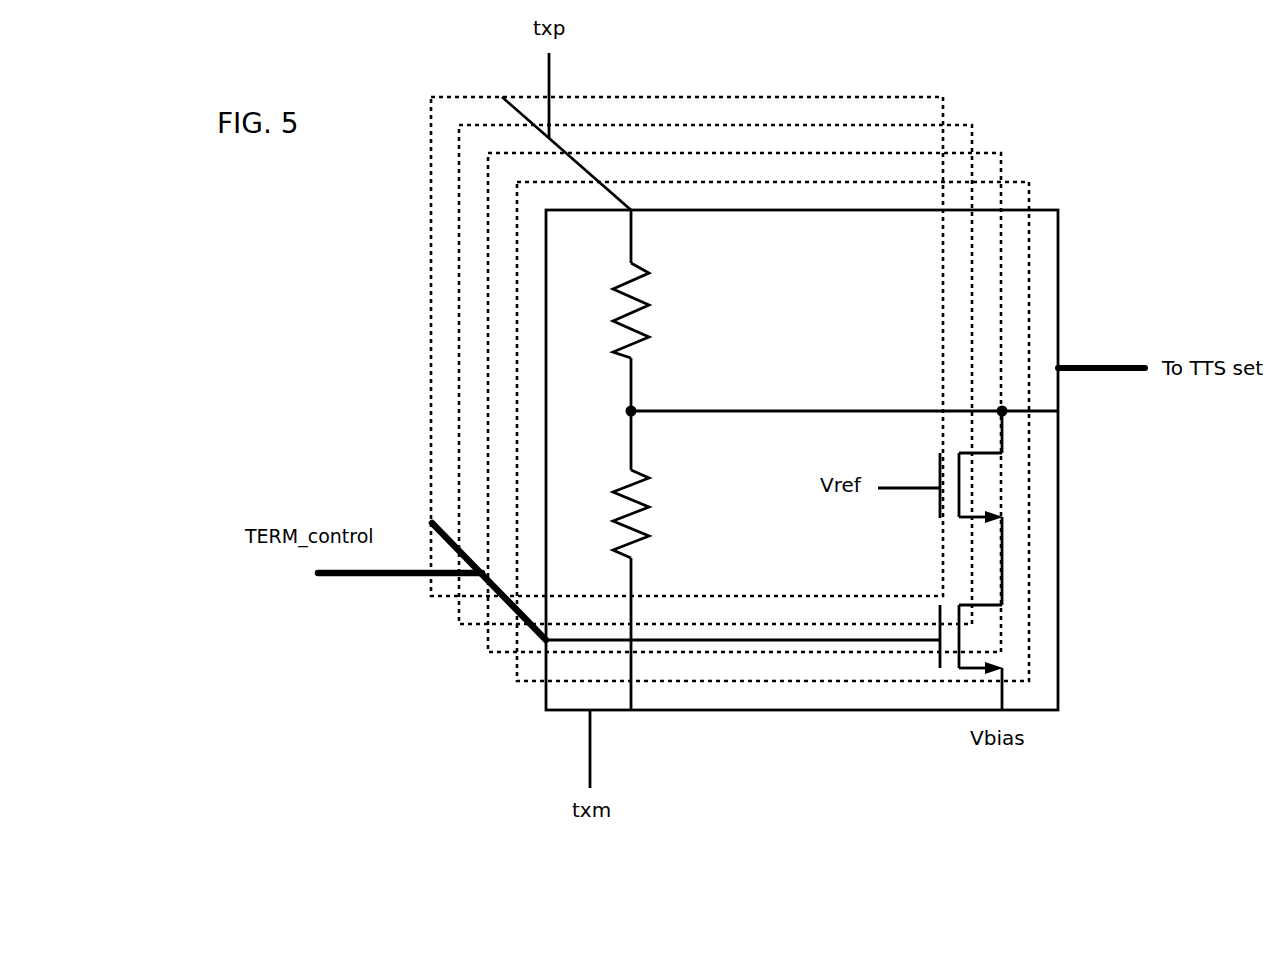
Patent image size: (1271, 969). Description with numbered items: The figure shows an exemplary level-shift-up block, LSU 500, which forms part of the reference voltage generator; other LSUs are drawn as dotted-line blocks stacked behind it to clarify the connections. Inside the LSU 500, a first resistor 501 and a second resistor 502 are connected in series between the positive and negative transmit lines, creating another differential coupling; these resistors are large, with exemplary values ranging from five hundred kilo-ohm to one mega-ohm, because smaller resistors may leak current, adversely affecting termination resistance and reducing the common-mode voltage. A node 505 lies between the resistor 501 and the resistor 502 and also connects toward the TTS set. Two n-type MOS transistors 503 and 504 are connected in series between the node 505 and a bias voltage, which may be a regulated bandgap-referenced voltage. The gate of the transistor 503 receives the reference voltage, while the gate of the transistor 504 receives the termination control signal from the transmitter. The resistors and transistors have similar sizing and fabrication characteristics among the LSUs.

The level-shift-up block (LSU) 500 is at (802, 460).
The resistor 501 is at (661, 310).
The resistor 502 is at (661, 514).
The n-type MOS (NMOS) transistor 503 is at (949, 508).
The n-type MOS (NMOS) transistor 504 is at (791, 657).
The node 505 is at (821, 410).